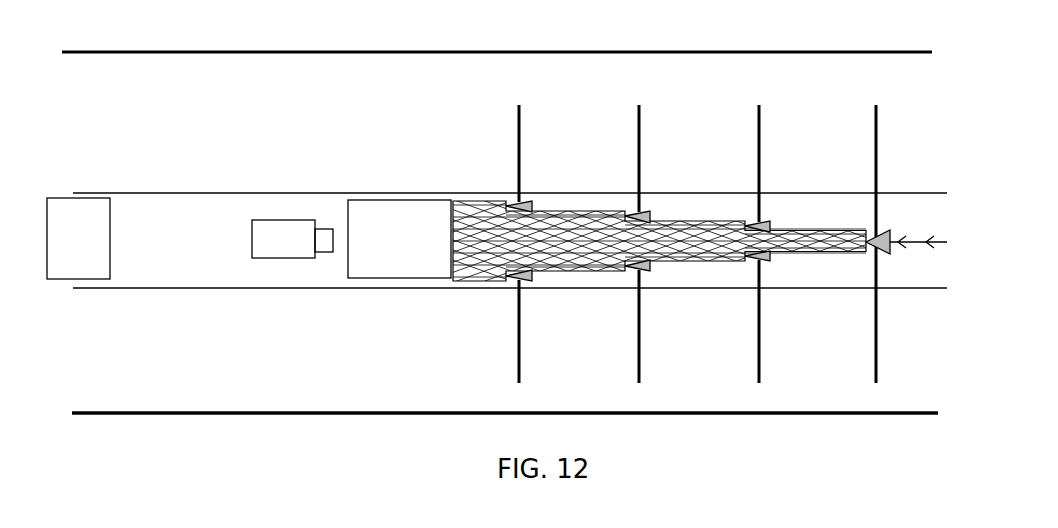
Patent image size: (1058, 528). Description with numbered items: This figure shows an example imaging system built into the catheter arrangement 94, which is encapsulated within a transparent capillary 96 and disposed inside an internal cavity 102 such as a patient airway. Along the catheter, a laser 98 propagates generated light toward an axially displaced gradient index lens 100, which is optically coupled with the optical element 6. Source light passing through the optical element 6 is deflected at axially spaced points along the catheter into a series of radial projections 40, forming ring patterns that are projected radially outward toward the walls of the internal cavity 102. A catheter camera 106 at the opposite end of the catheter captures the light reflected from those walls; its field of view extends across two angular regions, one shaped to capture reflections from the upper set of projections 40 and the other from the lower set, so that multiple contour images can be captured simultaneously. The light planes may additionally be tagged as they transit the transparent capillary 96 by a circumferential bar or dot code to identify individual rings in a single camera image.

The optical element 6 is at (488, 270).
The radial projections 40 is at (517, 117).
The catheter 94 is at (124, 200).
The transparent capillary 96 is at (330, 193).
The laser 98 is at (268, 250).
The gradient index (GRIN) lens 100 is at (415, 270).
The internal cavity 102 is at (890, 52).
The catheter camera 106 is at (88, 210).